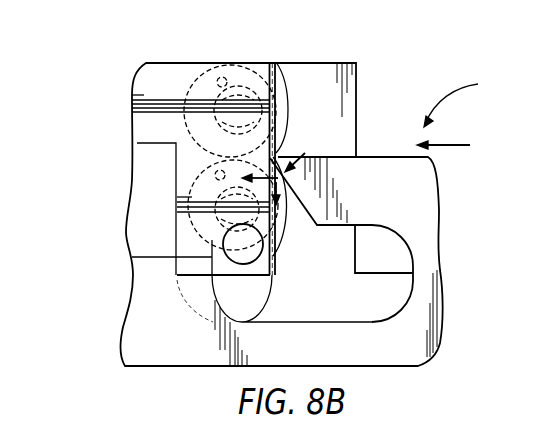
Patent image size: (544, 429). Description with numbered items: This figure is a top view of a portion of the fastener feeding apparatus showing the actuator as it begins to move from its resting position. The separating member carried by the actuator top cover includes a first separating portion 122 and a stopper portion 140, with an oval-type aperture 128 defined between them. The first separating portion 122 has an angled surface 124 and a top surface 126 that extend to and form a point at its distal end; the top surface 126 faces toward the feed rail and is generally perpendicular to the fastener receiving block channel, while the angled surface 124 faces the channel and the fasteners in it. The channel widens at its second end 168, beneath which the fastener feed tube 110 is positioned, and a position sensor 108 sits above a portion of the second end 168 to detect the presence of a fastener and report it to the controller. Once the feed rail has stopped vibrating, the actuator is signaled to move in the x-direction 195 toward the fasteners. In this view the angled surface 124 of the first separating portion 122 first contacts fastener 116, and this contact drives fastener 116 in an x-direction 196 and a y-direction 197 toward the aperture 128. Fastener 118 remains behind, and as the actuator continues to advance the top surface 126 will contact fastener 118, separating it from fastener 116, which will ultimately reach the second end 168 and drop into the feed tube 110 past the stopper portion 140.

The position sensor 108 is at (165, 262).
The fastener feed tube 110 is at (203, 319).
The fastener 116 is at (205, 172).
The fastener 118 is at (238, 72).
The first separating portion 122 is at (469, 95).
The angled surface 124 is at (290, 212).
The top surface 126 is at (383, 157).
The aperture 128 is at (383, 257).
The stopper portion 140 is at (150, 252).
The second end 168 is at (200, 285).
The x-direction 195 is at (460, 145).
The x-direction 196 is at (278, 178).
The y-direction 197 is at (273, 157).